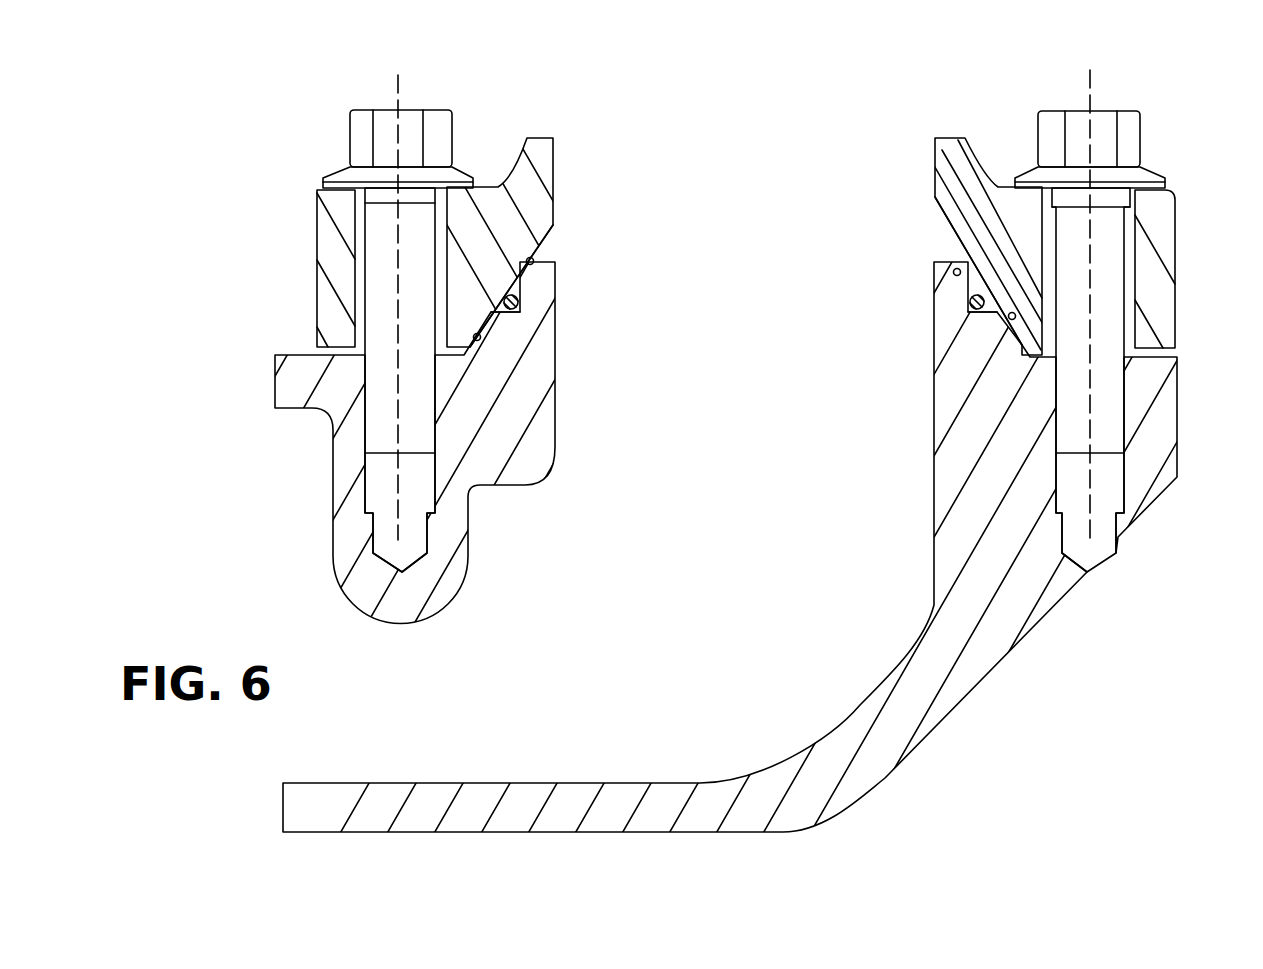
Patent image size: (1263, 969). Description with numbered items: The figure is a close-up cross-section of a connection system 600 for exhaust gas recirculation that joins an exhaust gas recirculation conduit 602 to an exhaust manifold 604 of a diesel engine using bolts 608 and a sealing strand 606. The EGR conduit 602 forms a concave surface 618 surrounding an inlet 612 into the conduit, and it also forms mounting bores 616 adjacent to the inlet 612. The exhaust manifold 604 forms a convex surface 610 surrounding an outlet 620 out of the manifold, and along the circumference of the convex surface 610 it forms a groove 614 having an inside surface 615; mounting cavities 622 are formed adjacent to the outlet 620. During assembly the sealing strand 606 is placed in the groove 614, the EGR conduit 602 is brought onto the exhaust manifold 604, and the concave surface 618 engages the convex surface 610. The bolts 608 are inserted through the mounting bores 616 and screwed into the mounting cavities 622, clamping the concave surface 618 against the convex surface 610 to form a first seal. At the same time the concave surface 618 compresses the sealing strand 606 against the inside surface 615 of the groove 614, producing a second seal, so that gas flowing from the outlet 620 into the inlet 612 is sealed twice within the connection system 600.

The connection system 600 is at (1141, 49).
The exhaust gas recirculation conduit 602 is at (557, 188).
The exhaust manifold 604 is at (933, 720).
The sealing strand 606 is at (528, 330).
The bolts 608 is at (413, 130).
The convex surface 610 is at (534, 262).
The inlet 612 is at (778, 175).
The groove 614 is at (519, 300).
The inside surface 615 is at (538, 398).
The mounting bores 616 is at (358, 298).
The concave surface 618 is at (477, 333).
The outlet 620 is at (643, 649).
The mounting cavities 622 is at (390, 544).